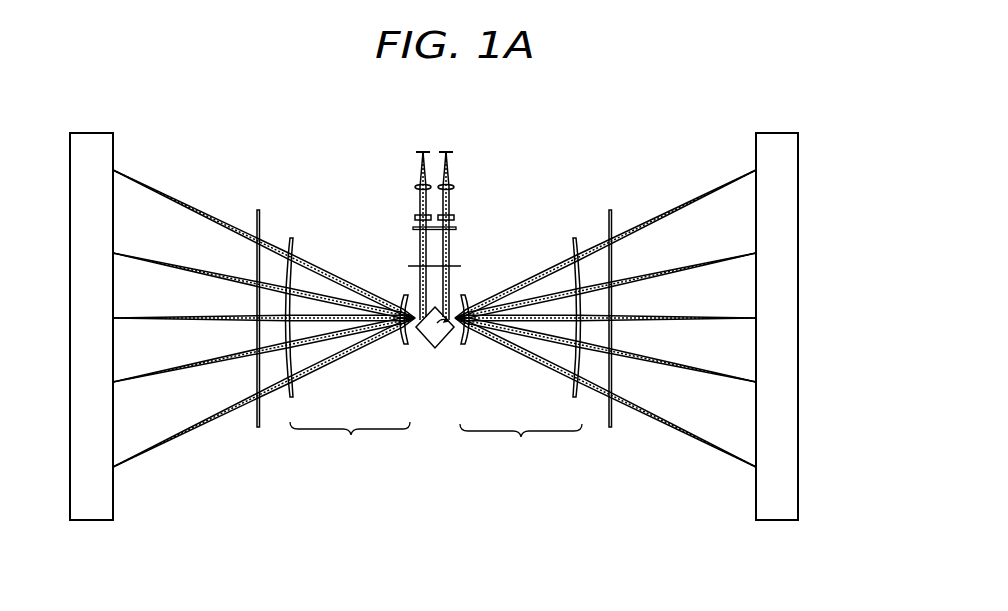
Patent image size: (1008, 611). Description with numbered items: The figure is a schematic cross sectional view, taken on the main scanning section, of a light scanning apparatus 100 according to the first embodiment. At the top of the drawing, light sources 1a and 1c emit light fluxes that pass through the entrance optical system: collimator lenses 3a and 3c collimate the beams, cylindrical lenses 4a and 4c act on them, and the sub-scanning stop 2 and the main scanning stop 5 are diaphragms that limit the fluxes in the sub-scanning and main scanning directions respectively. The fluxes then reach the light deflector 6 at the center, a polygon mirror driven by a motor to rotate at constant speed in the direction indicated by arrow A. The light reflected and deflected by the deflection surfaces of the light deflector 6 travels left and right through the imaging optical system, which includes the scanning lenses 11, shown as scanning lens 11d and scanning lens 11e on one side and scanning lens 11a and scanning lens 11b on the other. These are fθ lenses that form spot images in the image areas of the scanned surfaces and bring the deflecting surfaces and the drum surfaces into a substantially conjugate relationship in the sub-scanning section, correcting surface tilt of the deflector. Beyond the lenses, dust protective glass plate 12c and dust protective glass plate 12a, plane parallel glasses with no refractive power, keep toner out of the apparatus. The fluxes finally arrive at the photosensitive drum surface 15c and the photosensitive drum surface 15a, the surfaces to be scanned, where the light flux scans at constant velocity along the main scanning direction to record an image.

The light scanning apparatus 100 is at (232, 491).
The light source 1a is at (450, 150).
The light source 1c is at (420, 150).
The sub-scanning stop 2 is at (456, 229).
The collimator lens 3a is at (455, 186).
The collimator lens 3c is at (415, 187).
The cylindrical lens 4a is at (455, 216).
The cylindrical lens 4c is at (415, 217).
The main scanning stop 5 is at (461, 266).
The light deflector 6 is at (435, 350).
The scanning lenses 11 is at (436, 441).
The scanning lens 11a is at (468, 346).
The scanning lens 11b is at (577, 398).
The scanning lens 11d is at (400, 346).
The scanning lens 11e is at (291, 398).
The dust protective glass plate 12a is at (610, 427).
The dust protective glass plate 12c is at (258, 427).
The photosensitive drum surface 15a is at (773, 140).
The photosensitive drum surface 15c is at (93, 140).